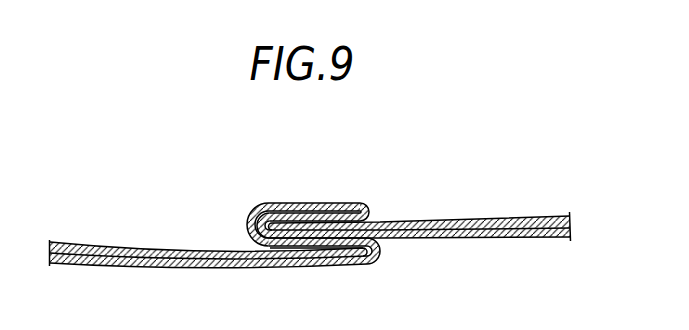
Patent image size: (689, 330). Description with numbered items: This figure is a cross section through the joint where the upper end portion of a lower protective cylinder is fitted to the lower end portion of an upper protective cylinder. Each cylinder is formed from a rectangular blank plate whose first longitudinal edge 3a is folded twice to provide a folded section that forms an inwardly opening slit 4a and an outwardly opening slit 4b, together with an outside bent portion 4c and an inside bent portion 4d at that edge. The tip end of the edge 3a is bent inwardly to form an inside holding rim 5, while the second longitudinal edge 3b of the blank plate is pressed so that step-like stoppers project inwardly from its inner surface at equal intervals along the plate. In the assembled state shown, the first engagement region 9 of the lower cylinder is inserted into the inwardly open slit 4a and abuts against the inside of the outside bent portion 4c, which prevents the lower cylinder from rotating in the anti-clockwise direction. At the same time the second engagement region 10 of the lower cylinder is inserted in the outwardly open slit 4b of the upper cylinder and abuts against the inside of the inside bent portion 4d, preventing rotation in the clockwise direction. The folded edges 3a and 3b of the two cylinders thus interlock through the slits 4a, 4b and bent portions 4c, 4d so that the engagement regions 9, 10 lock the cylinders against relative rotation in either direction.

The first longitudinal edge 3a is at (102, 247).
The second longitudinal edge 3b is at (505, 221).
The inwardly opening slit 4a is at (266, 247).
The outwardly opening slit 4b is at (258, 203).
The outside bent portion 4c is at (381, 250).
The inside bent portion 4d is at (250, 228).
The inside holding rim 5 is at (352, 203).
The first engagement region 9 is at (337, 248).
The second engagement region 10 is at (281, 203).